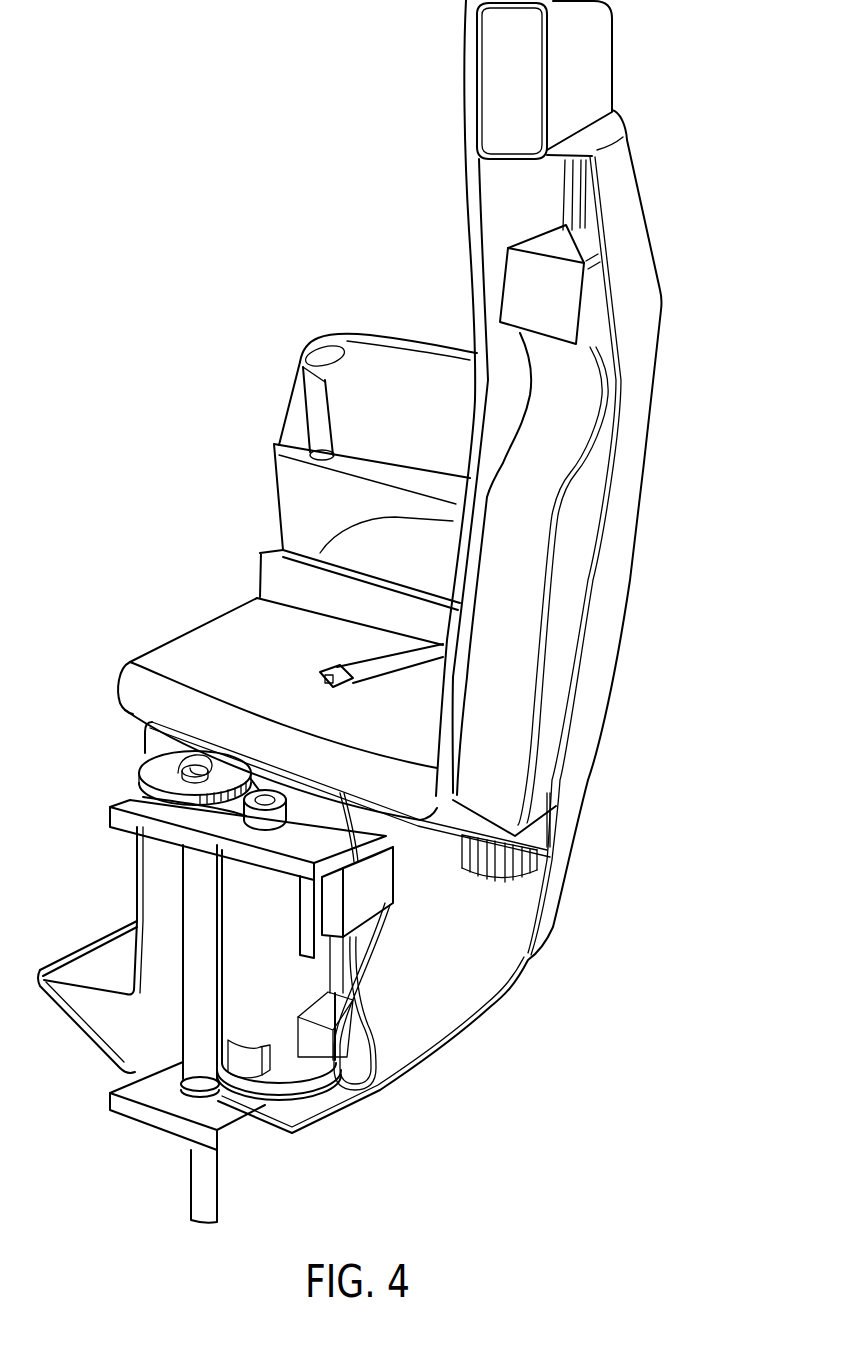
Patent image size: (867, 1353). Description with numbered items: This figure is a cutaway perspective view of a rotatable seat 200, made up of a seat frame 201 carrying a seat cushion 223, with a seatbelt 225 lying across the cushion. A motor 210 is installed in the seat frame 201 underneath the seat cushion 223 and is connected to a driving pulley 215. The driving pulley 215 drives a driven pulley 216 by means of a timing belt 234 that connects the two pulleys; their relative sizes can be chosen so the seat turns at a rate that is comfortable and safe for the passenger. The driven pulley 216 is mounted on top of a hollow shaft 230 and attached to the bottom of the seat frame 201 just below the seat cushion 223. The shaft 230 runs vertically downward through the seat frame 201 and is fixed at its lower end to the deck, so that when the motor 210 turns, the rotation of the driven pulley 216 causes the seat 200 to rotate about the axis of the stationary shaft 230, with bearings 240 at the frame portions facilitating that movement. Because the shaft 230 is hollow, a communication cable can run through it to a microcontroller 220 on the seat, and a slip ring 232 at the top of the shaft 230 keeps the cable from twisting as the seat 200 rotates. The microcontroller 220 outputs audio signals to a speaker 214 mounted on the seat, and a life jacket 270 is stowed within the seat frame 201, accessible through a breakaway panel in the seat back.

The seat 200 is at (650, 46).
The seat frame 201 is at (463, 44).
The life jacket 270 is at (538, 297).
The seatbelt 225 is at (353, 663).
The seat cushion 223 is at (180, 633).
The slip ring 232 is at (148, 745).
The driven pulley 216 is at (157, 775).
The timing belt 234 is at (170, 800).
The driving pulley 215 is at (247, 800).
The microcontroller 220 is at (367, 895).
The motor 210 is at (250, 992).
The bearings 240 is at (210, 1092).
The hollow shaft 230 is at (203, 1172).
The speaker 214 is at (495, 870).